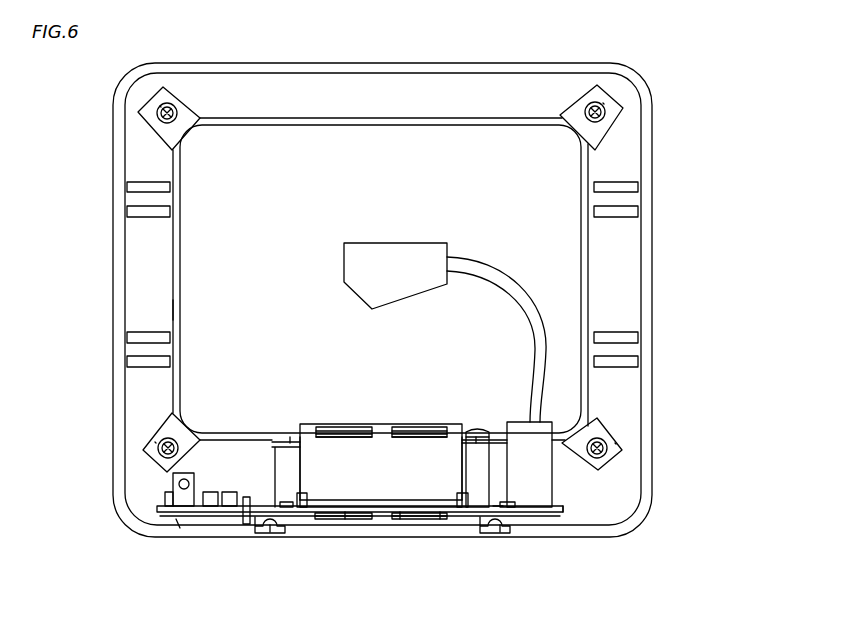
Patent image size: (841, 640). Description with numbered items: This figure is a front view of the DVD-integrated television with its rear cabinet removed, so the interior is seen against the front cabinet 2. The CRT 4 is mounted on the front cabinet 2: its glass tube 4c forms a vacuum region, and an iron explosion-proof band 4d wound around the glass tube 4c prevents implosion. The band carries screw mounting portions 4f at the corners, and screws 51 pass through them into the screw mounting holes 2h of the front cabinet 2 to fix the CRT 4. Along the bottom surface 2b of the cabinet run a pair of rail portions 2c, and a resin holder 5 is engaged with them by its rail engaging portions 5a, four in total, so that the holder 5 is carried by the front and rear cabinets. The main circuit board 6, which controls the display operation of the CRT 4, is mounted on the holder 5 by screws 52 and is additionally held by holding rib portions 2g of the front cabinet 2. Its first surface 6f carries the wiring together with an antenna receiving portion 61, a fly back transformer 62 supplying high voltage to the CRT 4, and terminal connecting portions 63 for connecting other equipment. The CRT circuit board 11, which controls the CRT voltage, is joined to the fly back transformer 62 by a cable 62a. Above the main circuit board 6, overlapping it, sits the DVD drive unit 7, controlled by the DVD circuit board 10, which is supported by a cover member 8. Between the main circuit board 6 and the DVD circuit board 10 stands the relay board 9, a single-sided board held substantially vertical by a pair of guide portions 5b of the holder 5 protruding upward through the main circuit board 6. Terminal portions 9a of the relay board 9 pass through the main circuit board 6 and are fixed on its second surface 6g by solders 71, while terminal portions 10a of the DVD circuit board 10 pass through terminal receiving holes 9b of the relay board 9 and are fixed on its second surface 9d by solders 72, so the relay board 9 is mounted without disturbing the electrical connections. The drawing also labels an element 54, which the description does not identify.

The front cabinet 2 is at (121, 212).
The screw mounting holes 2h is at (153, 105).
The bottom surface 2b is at (177, 523).
The rail portions 2c is at (275, 532).
The holding rib portions 2g is at (246, 510).
The CRT 4 is at (198, 258).
The glass tube 4c is at (198, 280).
The explosion-proof band 4d is at (173, 305).
The screw mounting portions 4f is at (172, 132).
The screws 51 is at (158, 114).
The screws 52 is at (283, 509).
The pin 54 is at (290, 437).
The holder 5 is at (407, 520).
The rail engaging portions 5a is at (262, 535).
The guide portions 5b is at (303, 508).
The main circuit board 6 is at (157, 513).
The first surface 6f is at (560, 511).
The second surface 6g is at (497, 508).
The antenna receiving portion 61 is at (177, 487).
The fly back transformer 62 is at (542, 472).
The cable 62a is at (533, 327).
The terminal connecting portions 63 is at (168, 508).
The DVD drive unit 7 is at (453, 437).
The solders 71 is at (353, 520).
The solders 72 is at (365, 426).
The cover member 8 is at (307, 425).
The relay board 9 is at (382, 503).
The terminal portions 9a is at (345, 520).
The terminal receiving holes 9b is at (323, 439).
The second surface 9d is at (272, 437).
The DVD circuit board 10 is at (336, 432).
The terminal portions 10a is at (362, 432).
The CRT circuit board 11 is at (400, 258).